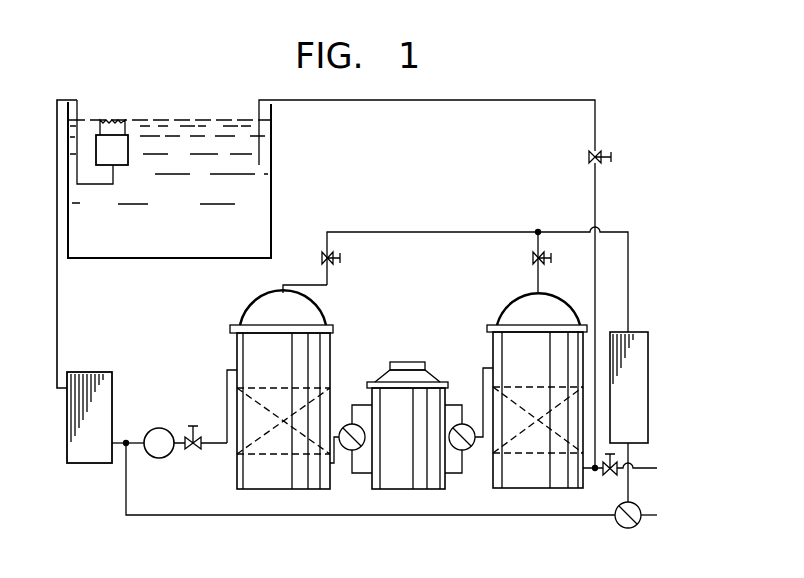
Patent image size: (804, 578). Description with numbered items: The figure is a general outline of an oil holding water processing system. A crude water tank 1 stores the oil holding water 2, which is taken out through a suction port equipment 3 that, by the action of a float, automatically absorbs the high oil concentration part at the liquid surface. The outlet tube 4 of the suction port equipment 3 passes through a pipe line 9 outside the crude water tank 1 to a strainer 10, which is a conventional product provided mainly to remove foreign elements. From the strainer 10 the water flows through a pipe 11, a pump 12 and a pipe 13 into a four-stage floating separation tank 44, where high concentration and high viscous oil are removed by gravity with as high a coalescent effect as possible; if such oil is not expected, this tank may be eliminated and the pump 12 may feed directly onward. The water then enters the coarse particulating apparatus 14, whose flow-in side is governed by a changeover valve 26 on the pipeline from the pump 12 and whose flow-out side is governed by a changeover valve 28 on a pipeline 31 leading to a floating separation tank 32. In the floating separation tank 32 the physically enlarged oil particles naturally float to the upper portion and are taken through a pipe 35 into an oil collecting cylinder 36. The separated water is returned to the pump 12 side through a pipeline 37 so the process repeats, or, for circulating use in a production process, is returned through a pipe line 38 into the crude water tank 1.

The crude water tank 1 is at (271, 172).
The oil holding water 2 is at (192, 216).
The suction port equipment 3 is at (123, 116).
The outlet tube 4 is at (98, 186).
The pipe line 9 is at (57, 290).
The strainer 10 is at (93, 372).
The pipe 11 is at (128, 441).
The pump 12 is at (157, 428).
The pipe 13 is at (227, 385).
The coarse particulating apparatus 14 is at (410, 358).
The changeover valve 26 is at (341, 428).
The changeover valve 28 is at (468, 425).
The pipeline 31 is at (481, 444).
The floating separation tank 32 is at (512, 302).
The pipe 35 is at (617, 232).
The oil collecting cylinder 36 is at (639, 332).
The pipeline 37 is at (512, 517).
The pipe line 38 is at (438, 100).
The four-stage floating separation tank 44 is at (256, 303).